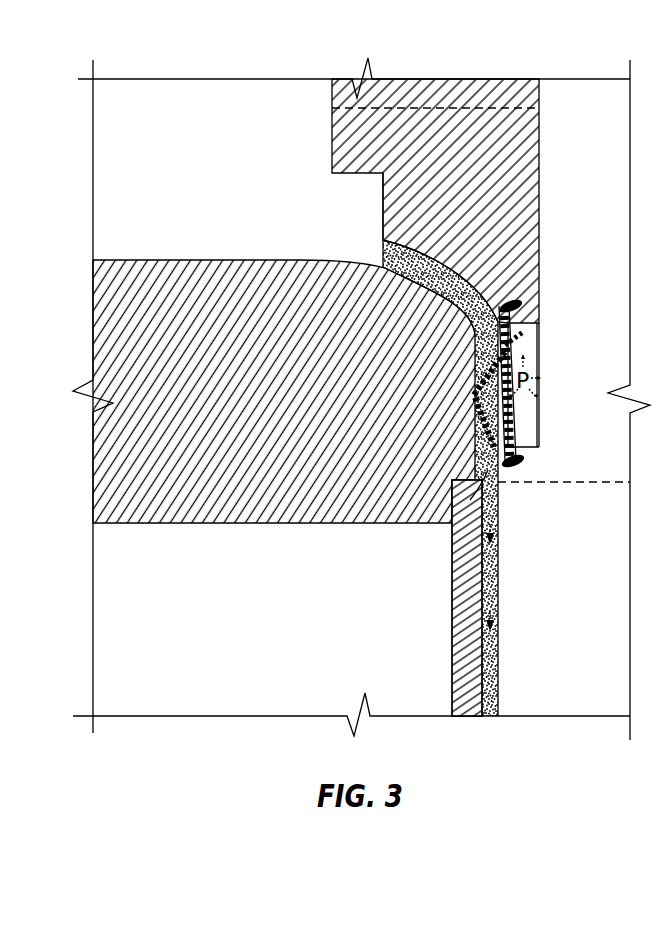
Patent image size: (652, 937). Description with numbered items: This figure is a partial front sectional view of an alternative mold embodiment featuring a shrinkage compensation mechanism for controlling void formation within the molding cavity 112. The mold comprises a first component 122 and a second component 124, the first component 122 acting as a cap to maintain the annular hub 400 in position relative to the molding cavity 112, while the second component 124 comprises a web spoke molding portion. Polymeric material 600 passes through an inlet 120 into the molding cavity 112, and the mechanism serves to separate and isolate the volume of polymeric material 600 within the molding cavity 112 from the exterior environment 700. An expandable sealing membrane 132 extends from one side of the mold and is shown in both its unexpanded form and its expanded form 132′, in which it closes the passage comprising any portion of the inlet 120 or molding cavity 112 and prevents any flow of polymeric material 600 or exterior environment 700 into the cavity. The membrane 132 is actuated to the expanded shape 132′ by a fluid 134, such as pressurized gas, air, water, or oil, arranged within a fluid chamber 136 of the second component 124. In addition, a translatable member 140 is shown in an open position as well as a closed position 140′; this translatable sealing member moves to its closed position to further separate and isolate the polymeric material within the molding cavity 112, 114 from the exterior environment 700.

The translatable member 140 is at (470, 70).
The closed position of translatable member 140′ is at (511, 110).
The exterior environment 700 is at (236, 162).
The second component 124 is at (607, 236).
The polymeric material 600 is at (395, 240).
The inlet 120 is at (362, 250).
The first component 122 is at (207, 527).
The annular hub 400 is at (452, 612).
The fluid 134 is at (523, 403).
The fluid chamber 136 is at (537, 355).
The expandable sealing membrane 132 is at (512, 435).
The expanded form of expandable sealing membrane 132′ is at (470, 500).
The molding cavity 112 is at (558, 570).
The flow channel 114 is at (495, 650).